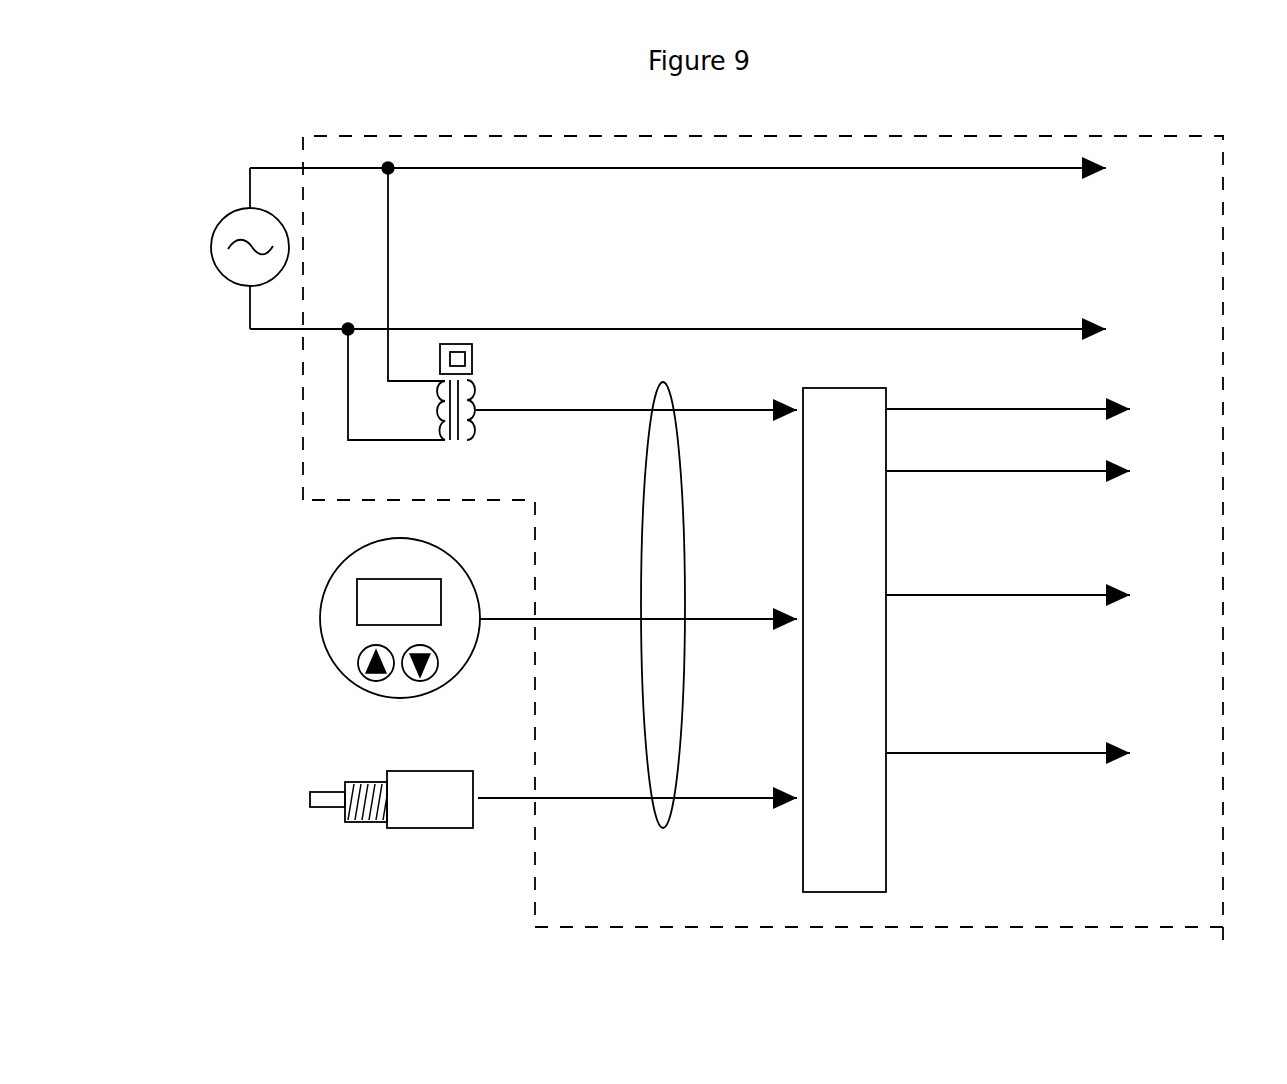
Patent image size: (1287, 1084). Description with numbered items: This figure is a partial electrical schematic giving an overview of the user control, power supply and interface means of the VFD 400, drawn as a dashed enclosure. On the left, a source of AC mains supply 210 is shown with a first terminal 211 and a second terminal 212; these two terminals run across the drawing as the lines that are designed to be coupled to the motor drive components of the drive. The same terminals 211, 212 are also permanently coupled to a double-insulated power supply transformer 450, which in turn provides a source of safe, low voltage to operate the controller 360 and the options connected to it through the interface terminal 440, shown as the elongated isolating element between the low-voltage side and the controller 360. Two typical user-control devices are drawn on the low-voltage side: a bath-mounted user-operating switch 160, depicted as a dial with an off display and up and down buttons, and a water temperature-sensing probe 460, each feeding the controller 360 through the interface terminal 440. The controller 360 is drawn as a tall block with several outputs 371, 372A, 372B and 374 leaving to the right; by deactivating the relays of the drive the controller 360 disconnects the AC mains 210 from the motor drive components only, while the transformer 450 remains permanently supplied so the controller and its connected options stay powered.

The bath-mounted user-operating switch 160 is at (333, 662).
The source of AC mains supply 210 is at (222, 275).
The first terminal 211 is at (1040, 170).
The second terminal 212 is at (1068, 327).
The controller 360 is at (895, 843).
The controller output 371 is at (1057, 408).
The controller output 372A is at (1015, 475).
The controller output 372B is at (1013, 598).
The controller output 374 is at (1012, 759).
The VFD 400 is at (297, 390).
The interface terminal 440 is at (642, 454).
The double-insulated power supply transformer 450 is at (478, 398).
The water temperature-sensing probe 460 is at (437, 834).